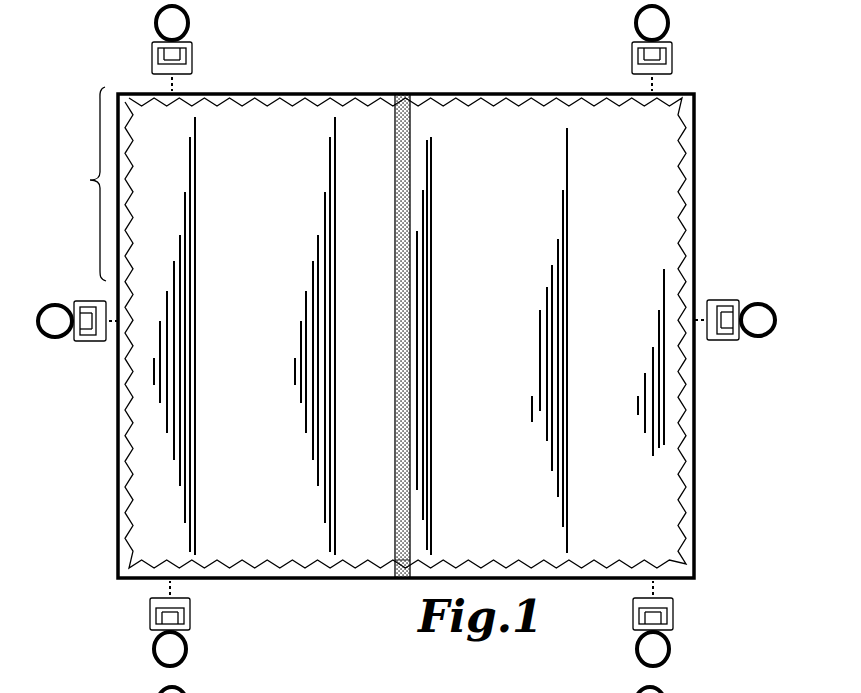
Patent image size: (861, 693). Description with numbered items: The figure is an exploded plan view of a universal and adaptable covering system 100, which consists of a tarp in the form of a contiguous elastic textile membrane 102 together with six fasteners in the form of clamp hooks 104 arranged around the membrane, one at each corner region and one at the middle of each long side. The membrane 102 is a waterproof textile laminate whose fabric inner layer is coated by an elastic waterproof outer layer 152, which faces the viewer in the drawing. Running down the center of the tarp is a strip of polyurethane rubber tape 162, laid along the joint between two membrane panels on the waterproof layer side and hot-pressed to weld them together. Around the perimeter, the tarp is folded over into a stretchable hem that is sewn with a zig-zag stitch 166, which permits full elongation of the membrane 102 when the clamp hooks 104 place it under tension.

The covering system 100 is at (90, 180).
The elastic textile membrane 102 is at (718, 460).
The clamp hook 104 is at (216, 56).
The elastic waterproof outer layer 152 is at (511, 270).
The polyurethane rubber tape 162 is at (410, 140).
The zig-zag stitch 166 is at (381, 566).